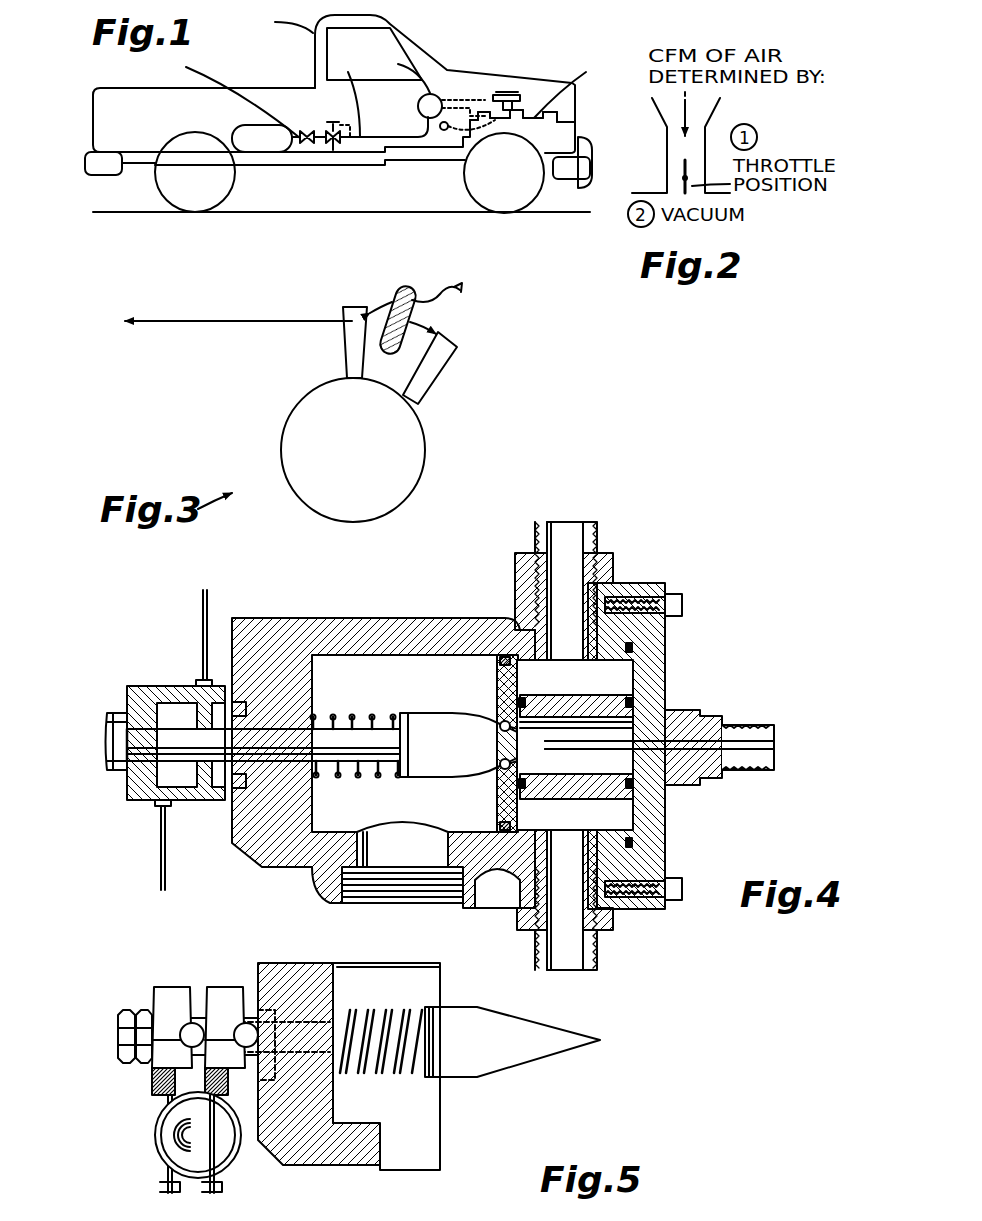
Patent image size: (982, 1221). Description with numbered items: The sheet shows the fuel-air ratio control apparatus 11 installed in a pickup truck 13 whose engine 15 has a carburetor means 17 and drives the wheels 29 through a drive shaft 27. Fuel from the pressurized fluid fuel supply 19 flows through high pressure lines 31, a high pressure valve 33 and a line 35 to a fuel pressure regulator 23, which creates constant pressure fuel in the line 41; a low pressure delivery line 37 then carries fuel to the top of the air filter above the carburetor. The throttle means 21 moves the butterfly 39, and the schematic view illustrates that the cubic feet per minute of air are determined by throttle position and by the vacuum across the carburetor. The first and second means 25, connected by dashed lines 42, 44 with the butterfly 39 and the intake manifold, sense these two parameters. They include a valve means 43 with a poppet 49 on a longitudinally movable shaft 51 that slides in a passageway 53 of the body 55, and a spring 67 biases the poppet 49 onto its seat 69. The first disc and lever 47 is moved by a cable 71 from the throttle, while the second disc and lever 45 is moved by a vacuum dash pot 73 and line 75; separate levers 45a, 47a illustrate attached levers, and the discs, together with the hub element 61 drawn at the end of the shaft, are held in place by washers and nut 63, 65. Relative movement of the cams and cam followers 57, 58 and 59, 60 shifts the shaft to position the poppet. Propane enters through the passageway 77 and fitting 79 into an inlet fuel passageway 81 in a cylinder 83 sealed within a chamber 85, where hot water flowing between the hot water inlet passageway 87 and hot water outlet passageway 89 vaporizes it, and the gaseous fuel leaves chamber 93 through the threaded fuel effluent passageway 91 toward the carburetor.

In FIG. 1, the apparatus 11 is at (518, 54).
In FIG. 1, the pickup truck 13 is at (278, 19).
In FIG. 1, the engine 15 is at (568, 82).
In FIG. 1, the carburetor means 17 is at (528, 115).
In FIG. 2, the carburetor means 17 is at (667, 137).
In FIG. 1, the fluid fuel supply 19 is at (262, 145).
In FIG. 1, the throttle means 21 is at (446, 131).
In FIG. 1, the fuel pressure regulator 23 is at (333, 143).
In FIG. 1, the first and second means 25 is at (453, 54).
In FIG. 1, the drive shaft 27 is at (304, 160).
In FIG. 1, the wheels 29 is at (166, 190).
In FIG. 1, the high pressure lines 31 is at (240, 92).
In FIG. 1, the high pressure valve 33 is at (306, 133).
In FIG. 1, the line 35 is at (332, 131).
In FIG. 1, the low pressure delivery line 37 is at (442, 102).
In FIG. 2, the butterfly 39 is at (680, 166).
In FIG. 1, the line 41 is at (346, 92).
In FIG. 1, the dashed line 42 is at (398, 70).
In FIG. 4, the valve means 43 is at (466, 690).
In FIG. 1, the dashed line 44 is at (485, 98).
In FIG. 3, the second disc and lever 45 is at (442, 362).
In FIG. 4, the second disc and lever 45 is at (200, 680).
In FIG. 5, the second disc and lever 45 is at (240, 1100).
In FIG. 4, the lever 45a is at (207, 602).
In FIG. 5, the lever 45a is at (216, 1180).
In FIG. 3, the first disc and lever 47 is at (340, 352).
In FIG. 4, the first disc and lever 47 is at (150, 686).
In FIG. 5, the first disc and lever 47 is at (158, 1098).
In FIG. 4, the lever 47a is at (158, 860).
In FIG. 5, the lever 47a is at (162, 1178).
In FIG. 4, the poppet 49 is at (492, 760).
In FIG. 4, the shaft 51 is at (380, 720).
In FIG. 4, the passageway 53 is at (282, 700).
In FIG. 4, the body 55 is at (358, 657).
In FIG. 5, the cam 57 is at (192, 1030).
In FIG. 5, the cam follower 58 is at (180, 1040).
In FIG. 5, the cam 59 is at (247, 1030).
In FIG. 5, the cam follower 60 is at (232, 1040).
In FIG. 4, the hub 61 is at (162, 728).
In FIG. 4, the washers 63 is at (140, 800).
In FIG. 4, the nut 65 is at (112, 770).
In FIG. 4, the spring 67 is at (366, 780).
In FIG. 4, the seat 69 is at (500, 722).
In FIG. 3, the cable 71 is at (205, 322).
In FIG. 3, the vacuum dash pot 73 is at (396, 296).
In FIG. 5, the vacuum dash pot 73 is at (168, 1140).
In FIG. 3, the line 75 is at (452, 302).
In FIG. 4, the passageway 77 is at (735, 740).
In FIG. 4, the fitting 79 is at (705, 716).
In FIG. 4, the inlet fuel passageway 81 is at (640, 740).
In FIG. 4, the cylinder 83 is at (640, 690).
In FIG. 4, the chamber 85 is at (620, 815).
In FIG. 4, the hot water inlet passageway 87 is at (568, 949).
In FIG. 4, the hot water outlet passageway 89 is at (568, 547).
In FIG. 4, the fuel effluent passageway 91 is at (340, 898).
In FIG. 4, the chamber 93 is at (410, 835).
In FIG. 5, the chamber 93 is at (405, 1100).